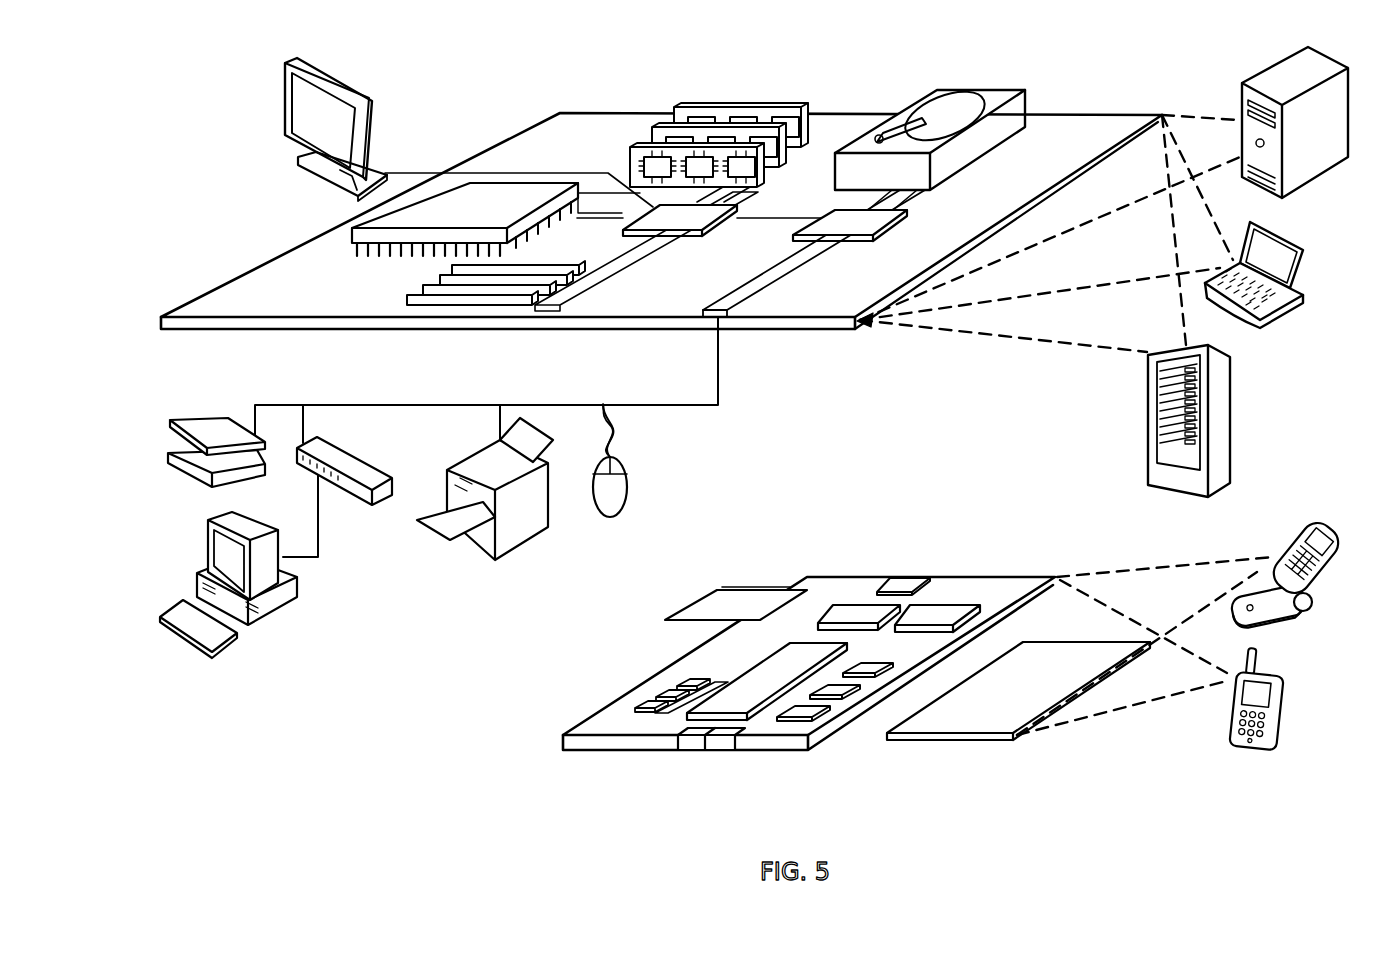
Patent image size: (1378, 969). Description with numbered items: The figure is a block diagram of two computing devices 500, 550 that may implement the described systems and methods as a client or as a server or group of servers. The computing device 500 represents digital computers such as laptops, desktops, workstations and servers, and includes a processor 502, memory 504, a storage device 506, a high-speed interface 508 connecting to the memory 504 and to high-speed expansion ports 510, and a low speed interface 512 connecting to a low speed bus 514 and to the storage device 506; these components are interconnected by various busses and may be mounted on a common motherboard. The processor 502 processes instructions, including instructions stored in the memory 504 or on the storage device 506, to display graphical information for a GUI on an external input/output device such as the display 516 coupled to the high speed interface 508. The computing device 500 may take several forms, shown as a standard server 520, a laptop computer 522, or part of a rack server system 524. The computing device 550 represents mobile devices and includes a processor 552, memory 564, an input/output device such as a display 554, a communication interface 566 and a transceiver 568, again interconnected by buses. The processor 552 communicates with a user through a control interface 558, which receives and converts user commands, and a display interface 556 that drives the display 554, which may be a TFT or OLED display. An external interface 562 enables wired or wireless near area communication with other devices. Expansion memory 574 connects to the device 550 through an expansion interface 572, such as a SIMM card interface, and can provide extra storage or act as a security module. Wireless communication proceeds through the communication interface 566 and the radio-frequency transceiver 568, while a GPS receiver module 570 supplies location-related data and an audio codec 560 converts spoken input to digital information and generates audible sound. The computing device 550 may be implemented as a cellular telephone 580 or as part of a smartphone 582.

The computing device 500 is at (486, 93).
The processor 502 is at (352, 230).
The memory 504 is at (692, 113).
The storage device 506 is at (920, 93).
The high-speed interface 508 is at (657, 217).
The high-speed expansion ports 510 is at (423, 290).
The low speed interface 512 is at (827, 213).
The low speed bus 514 is at (727, 318).
The display 516 is at (288, 62).
The standard server 520 is at (1240, 99).
The laptop computer 522 is at (1307, 248).
The rack server system 524 is at (1152, 445).
The computing device 550 is at (542, 744).
The processor 552 is at (740, 703).
The display 554 is at (980, 720).
The display interface 556 is at (807, 712).
The control interface 558 is at (843, 687).
The audio codec 560 is at (868, 672).
The external interface 562 is at (705, 740).
The memory 564 is at (660, 697).
The communication interface 566 is at (862, 610).
The transceiver 568 is at (938, 613).
The GPS receiver module 570 is at (912, 583).
The expansion interface 572 is at (790, 586).
The expansion memory 574 is at (717, 590).
The cellular telephone 580 is at (1290, 530).
The smartphone 582 is at (1230, 712).